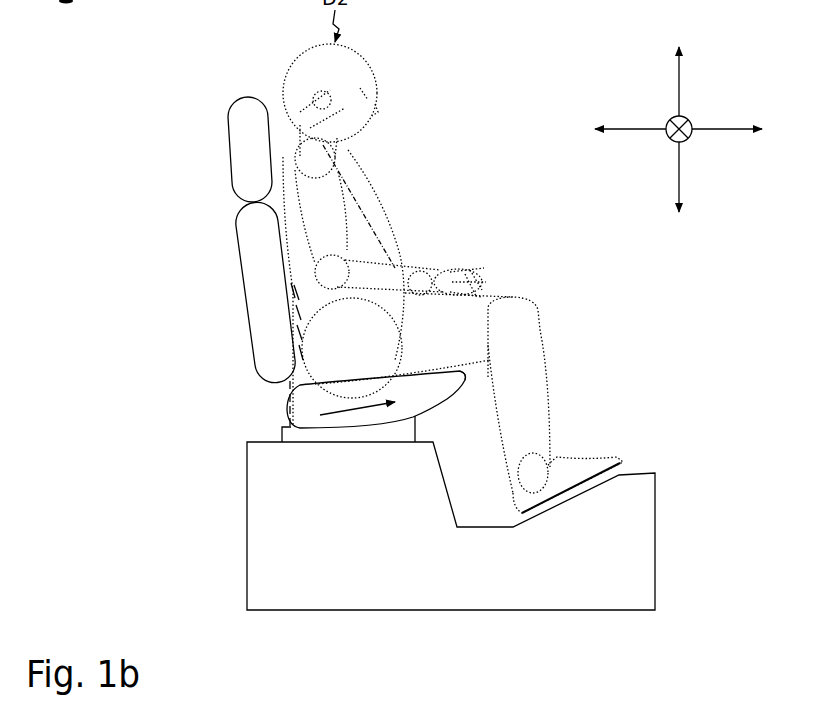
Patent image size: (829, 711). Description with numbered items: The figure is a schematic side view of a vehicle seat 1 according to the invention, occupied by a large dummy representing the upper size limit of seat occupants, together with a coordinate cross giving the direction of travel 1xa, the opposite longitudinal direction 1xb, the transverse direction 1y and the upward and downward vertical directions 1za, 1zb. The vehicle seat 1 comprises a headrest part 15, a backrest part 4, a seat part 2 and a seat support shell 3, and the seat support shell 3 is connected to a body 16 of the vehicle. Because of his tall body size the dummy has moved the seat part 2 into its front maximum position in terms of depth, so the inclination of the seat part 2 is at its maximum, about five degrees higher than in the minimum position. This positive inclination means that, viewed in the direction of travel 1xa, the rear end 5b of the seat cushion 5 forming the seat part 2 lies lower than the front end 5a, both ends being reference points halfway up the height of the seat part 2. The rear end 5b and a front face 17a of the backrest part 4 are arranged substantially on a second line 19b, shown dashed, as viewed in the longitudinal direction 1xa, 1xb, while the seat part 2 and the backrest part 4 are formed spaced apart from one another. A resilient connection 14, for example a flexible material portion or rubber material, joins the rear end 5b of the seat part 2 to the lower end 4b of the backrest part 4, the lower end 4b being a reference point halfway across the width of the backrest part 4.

The vehicle seat 1 is at (187, 52).
The seat part 2 is at (448, 392).
The seat support shell 3 is at (405, 436).
The backrest part 4 is at (252, 242).
The lower end of the backrest part 4b is at (290, 385).
The seat cushion 5 is at (376, 399).
The front end of the seat part 5a is at (476, 374).
The rear end of the seat part 5b is at (290, 422).
The resilient connection 14 is at (290, 410).
The headrest part 15 is at (236, 147).
The body of a vehicle 16 is at (247, 468).
The front face of the backrest part 17a is at (293, 289).
The second line 19b is at (290, 398).
The direction of travel 1xa is at (748, 127).
The longitudinal direction 1xb is at (620, 128).
The transverse direction 1y is at (683, 137).
The vertical direction 1za is at (680, 63).
The vertical direction 1zb is at (678, 190).